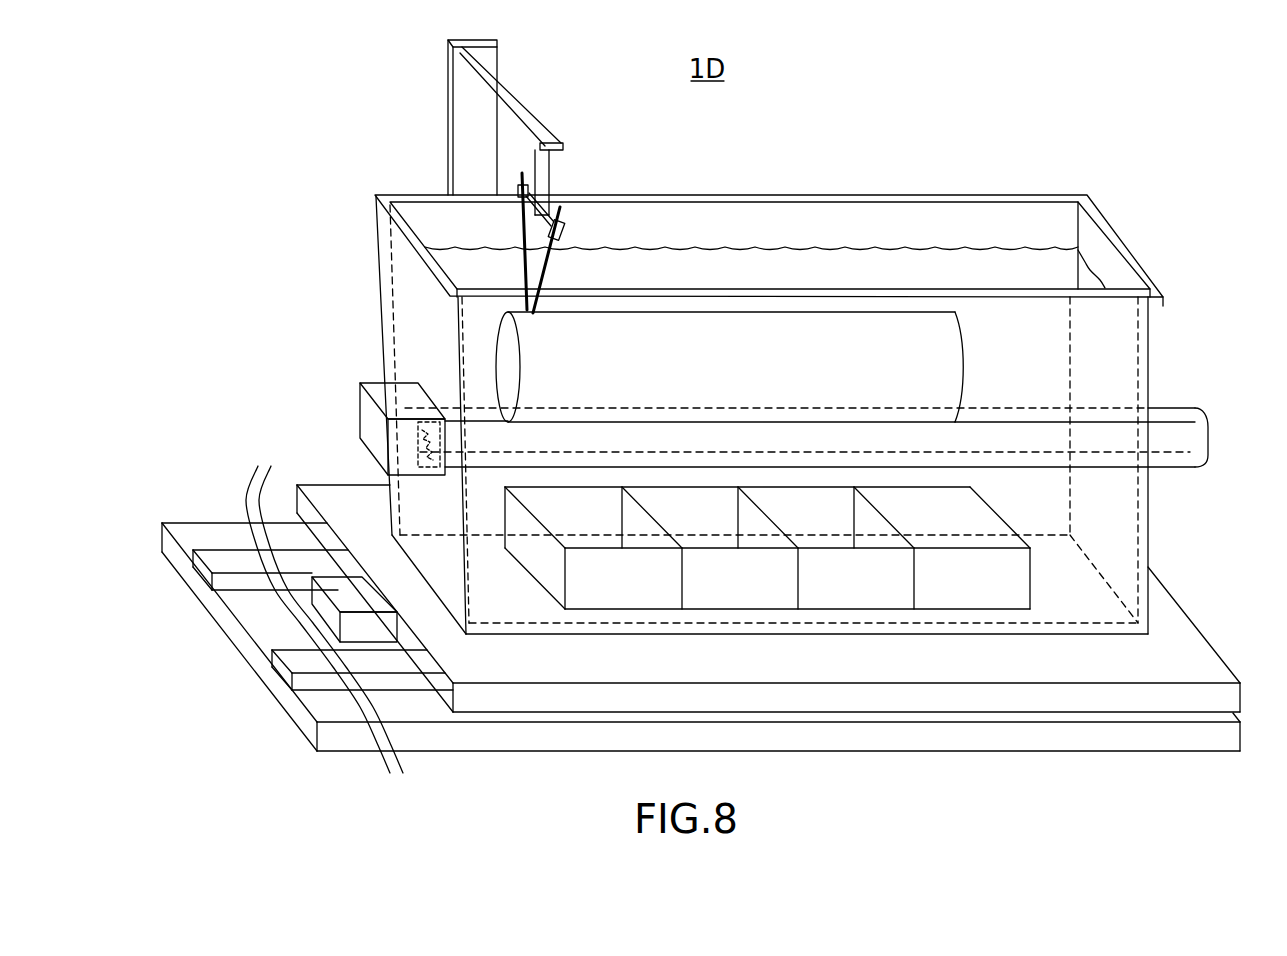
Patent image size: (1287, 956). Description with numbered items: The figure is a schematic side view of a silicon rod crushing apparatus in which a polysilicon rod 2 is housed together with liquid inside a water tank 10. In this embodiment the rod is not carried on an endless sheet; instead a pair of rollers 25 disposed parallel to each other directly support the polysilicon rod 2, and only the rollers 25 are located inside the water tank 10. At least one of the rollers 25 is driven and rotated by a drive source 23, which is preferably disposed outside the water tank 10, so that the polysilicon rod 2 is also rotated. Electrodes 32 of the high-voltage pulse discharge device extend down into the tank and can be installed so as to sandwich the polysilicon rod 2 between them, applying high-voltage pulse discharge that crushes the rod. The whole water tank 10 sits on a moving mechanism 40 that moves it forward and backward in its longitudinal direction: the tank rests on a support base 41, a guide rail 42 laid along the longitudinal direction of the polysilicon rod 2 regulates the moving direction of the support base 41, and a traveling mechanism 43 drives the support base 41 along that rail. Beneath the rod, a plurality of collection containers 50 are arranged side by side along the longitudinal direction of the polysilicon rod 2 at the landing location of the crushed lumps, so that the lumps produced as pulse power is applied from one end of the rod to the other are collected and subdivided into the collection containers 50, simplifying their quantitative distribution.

The polysilicon rod 2 is at (946, 357).
The water tank 10 is at (382, 263).
The drive source 23 is at (368, 380).
The rollers 25 is at (1057, 433).
The electrodes 32 is at (527, 247).
The moving mechanism 40 is at (322, 436).
The support base 41 is at (316, 500).
The guide rail 42 is at (215, 560).
The traveling mechanism 43 is at (357, 597).
The collection containers 50 is at (627, 600).